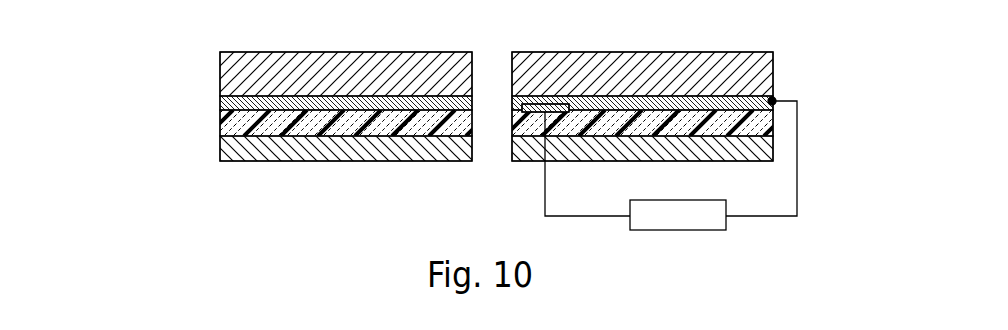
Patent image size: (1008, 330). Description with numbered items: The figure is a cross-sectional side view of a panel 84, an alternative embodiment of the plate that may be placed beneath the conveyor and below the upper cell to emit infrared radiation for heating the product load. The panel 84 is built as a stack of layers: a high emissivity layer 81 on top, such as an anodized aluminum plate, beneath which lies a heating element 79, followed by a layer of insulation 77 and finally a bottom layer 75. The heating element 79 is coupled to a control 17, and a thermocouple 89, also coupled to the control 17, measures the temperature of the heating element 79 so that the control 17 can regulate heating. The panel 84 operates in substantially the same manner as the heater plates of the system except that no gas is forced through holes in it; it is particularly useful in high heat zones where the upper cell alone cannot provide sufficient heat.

The panel 84 is at (383, 47).
The high emissivity layer 81 is at (220, 70).
The heating element 79 is at (220, 102).
The insulation 77 is at (220, 128).
The bottom layer 75 is at (220, 148).
The thermocouple 89 is at (812, 38).
The control 17 is at (667, 232).